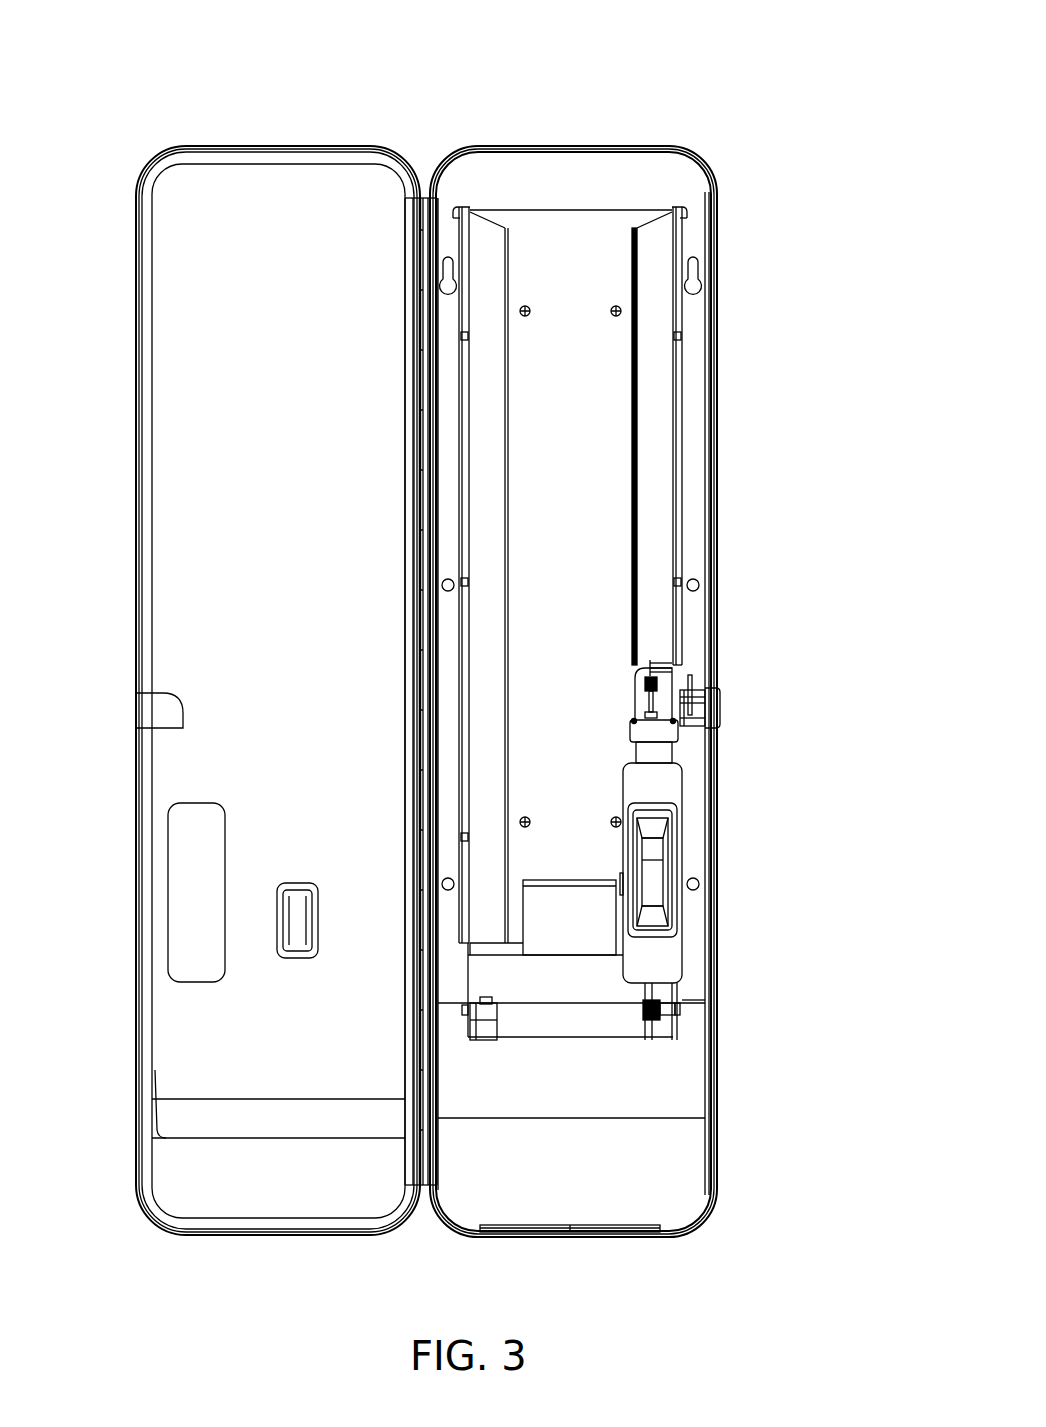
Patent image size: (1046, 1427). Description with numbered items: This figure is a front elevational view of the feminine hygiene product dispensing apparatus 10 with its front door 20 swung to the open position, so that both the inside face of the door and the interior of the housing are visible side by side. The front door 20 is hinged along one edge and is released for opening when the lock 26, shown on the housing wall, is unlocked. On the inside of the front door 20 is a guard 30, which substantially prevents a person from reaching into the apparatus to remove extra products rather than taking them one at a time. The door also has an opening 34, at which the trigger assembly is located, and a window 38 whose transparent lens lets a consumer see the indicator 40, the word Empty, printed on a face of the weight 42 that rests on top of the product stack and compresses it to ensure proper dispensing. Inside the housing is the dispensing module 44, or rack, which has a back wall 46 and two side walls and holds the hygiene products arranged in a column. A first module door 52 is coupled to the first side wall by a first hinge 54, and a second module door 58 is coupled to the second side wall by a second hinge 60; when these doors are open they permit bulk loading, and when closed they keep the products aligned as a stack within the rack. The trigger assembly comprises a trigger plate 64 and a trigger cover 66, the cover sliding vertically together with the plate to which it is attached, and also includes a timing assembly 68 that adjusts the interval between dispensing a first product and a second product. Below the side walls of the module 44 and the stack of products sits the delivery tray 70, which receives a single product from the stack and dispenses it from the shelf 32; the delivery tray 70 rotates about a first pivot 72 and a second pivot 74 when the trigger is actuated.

The feminine hygiene product dispensing apparatus 10 is at (636, 78).
The front door 20 is at (258, 190).
The lock 26 is at (734, 710).
The guard 30 is at (178, 1123).
The shelf 32 is at (512, 1218).
The opening 34 is at (188, 890).
The window 38 is at (290, 888).
The indicator 40 is at (536, 948).
The weight 42 is at (573, 930).
The dispensing module 44 is at (593, 238).
The back wall 46 is at (540, 236).
The first module door 52 is at (482, 405).
The first hinge 54 is at (465, 530).
The second module door 58 is at (648, 377).
The second hinge 60 is at (680, 497).
The trigger plate 64 is at (668, 955).
The trigger cover 66 is at (655, 883).
The timing assembly 68 is at (688, 677).
The delivery tray 70 is at (561, 1018).
The first pivot 72 is at (458, 1010).
The second pivot 74 is at (682, 1010).